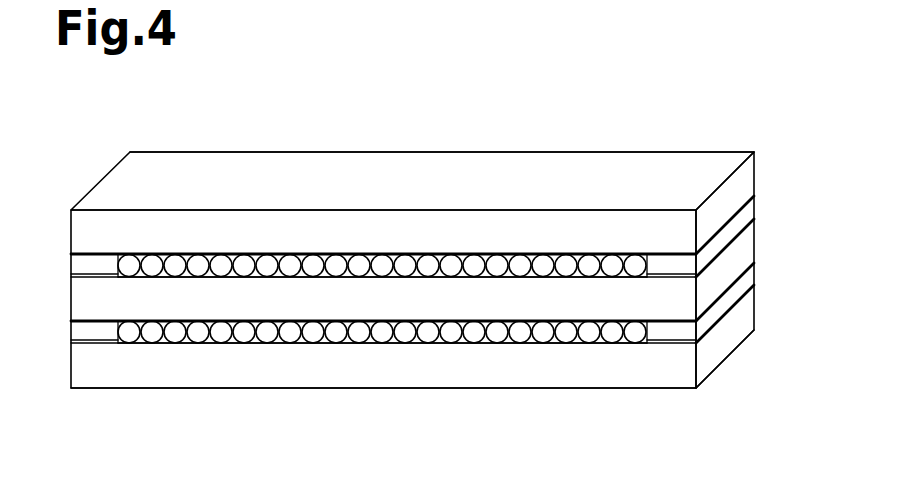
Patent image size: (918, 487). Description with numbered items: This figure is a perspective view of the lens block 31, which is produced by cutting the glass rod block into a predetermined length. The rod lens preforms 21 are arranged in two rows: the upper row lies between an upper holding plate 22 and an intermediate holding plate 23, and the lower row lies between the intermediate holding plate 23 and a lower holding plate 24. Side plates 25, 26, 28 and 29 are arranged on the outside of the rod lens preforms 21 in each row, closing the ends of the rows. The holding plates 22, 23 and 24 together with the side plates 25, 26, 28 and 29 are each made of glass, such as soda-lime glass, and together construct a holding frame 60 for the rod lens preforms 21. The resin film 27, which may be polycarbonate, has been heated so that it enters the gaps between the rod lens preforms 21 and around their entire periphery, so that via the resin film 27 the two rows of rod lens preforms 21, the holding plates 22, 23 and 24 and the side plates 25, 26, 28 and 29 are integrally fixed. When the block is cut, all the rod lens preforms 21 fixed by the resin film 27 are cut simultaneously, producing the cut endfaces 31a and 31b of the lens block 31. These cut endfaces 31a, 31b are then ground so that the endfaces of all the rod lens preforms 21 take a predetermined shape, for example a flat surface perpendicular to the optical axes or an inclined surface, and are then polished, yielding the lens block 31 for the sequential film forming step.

The lens block 31 is at (500, 139).
The cut endface 31a is at (672, 373).
The cut endface 31b is at (757, 162).
The holding frame 60 is at (698, 160).
The upper holding plate 22 is at (80, 222).
The intermediate holding plate 23 is at (747, 247).
The lower holding plate 24 is at (142, 379).
The side plate 25 is at (80, 265).
The side plate 26 is at (747, 212).
The side plate 28 is at (80, 332).
The side plate 29 is at (747, 280).
The rod lens preform 21 is at (243, 262).
The resin film 27 is at (508, 255).